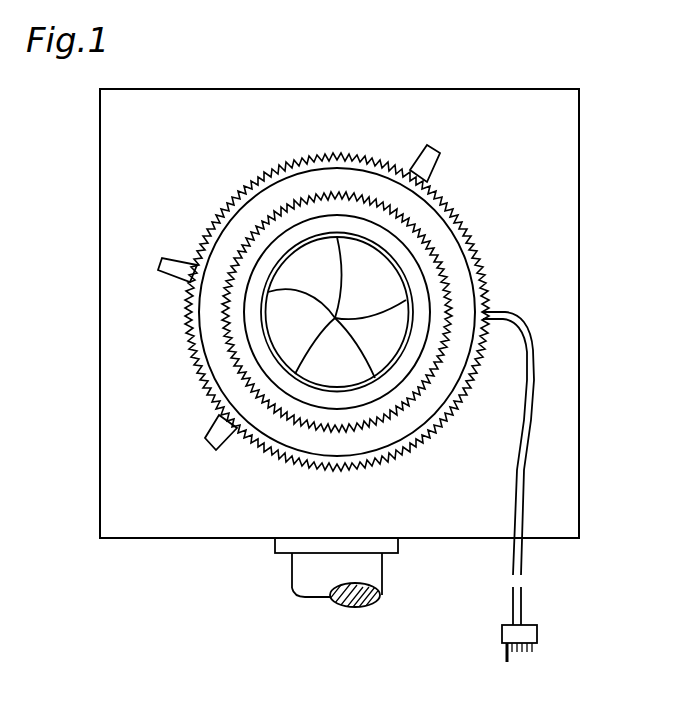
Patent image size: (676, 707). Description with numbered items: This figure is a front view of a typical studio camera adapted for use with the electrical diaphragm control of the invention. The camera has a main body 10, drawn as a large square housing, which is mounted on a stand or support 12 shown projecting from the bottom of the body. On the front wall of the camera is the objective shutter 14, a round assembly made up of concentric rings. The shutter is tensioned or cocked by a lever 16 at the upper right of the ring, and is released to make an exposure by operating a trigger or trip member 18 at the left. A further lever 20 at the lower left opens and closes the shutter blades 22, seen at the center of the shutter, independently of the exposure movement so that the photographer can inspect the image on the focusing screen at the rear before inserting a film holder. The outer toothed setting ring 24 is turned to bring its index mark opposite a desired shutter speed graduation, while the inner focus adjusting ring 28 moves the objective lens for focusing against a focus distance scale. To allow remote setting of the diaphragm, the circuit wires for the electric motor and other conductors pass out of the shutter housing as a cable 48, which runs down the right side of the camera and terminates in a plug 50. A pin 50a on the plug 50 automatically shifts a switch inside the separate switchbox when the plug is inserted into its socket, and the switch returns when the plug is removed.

The main body 10 is at (570, 440).
The stand or support 12 is at (372, 580).
The objective shutter 14 is at (450, 243).
The lever 16 is at (433, 158).
The trigger or trip member 18 is at (172, 262).
The lever 20 is at (208, 442).
The shutter blades 22 is at (369, 313).
The setting ring 24 is at (295, 170).
The focus adjusting ring 28 is at (230, 337).
The cable 48 is at (522, 600).
The plug 50 is at (537, 633).
The pin 50a is at (505, 657).